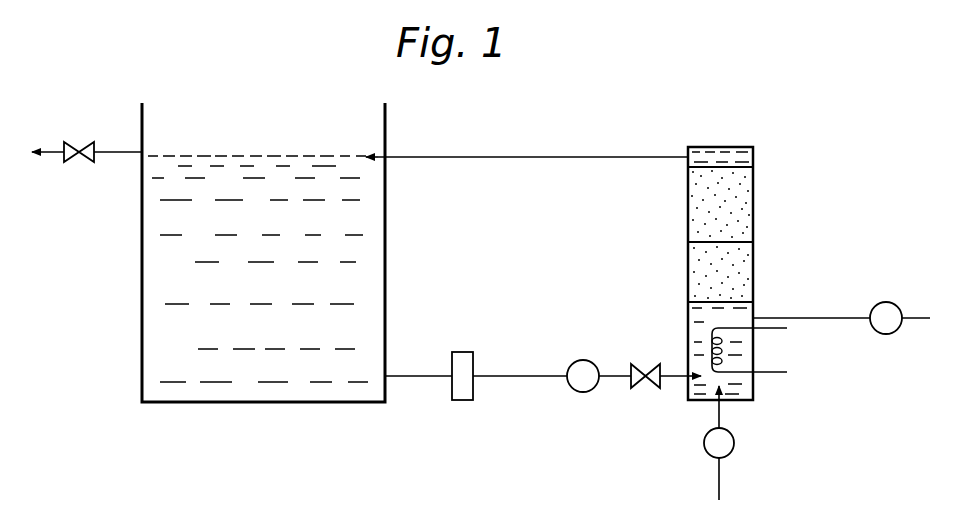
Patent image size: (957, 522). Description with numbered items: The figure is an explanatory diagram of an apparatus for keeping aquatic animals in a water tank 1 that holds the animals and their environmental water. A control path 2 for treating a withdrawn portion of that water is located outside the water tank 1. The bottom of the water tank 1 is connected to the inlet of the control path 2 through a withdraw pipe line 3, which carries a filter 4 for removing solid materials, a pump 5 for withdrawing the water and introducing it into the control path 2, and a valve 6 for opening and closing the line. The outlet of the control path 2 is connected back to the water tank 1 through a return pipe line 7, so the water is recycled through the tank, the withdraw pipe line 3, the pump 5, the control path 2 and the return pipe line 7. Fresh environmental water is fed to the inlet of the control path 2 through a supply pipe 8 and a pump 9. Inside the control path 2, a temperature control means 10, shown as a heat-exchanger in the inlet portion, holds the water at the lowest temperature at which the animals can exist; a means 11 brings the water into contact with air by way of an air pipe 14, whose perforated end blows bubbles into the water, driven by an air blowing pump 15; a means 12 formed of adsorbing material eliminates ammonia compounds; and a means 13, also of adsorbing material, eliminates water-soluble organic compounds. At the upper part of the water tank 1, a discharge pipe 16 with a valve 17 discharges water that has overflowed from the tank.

The water tank 1 is at (154, 356).
The control path 2 is at (762, 203).
The withdraw pipe line 3 is at (525, 376).
The filter 4 is at (462, 352).
The pump 5 is at (583, 360).
The valve 6 is at (643, 364).
The return pipe line 7 is at (495, 157).
The supply pipe 8 is at (719, 483).
The pump 9 is at (735, 443).
The temperature control means 10 is at (748, 357).
The means for bringing the environmental water into contact with air 11 is at (723, 315).
The means for eliminating ammonia compounds 12 is at (738, 268).
The means for eliminating water soluble organic compounds 13 is at (740, 226).
The air pipe 14 is at (842, 316).
The air blowing pump 15 is at (888, 302).
The discharge pipe 16 is at (118, 150).
The valve 17 is at (80, 142).